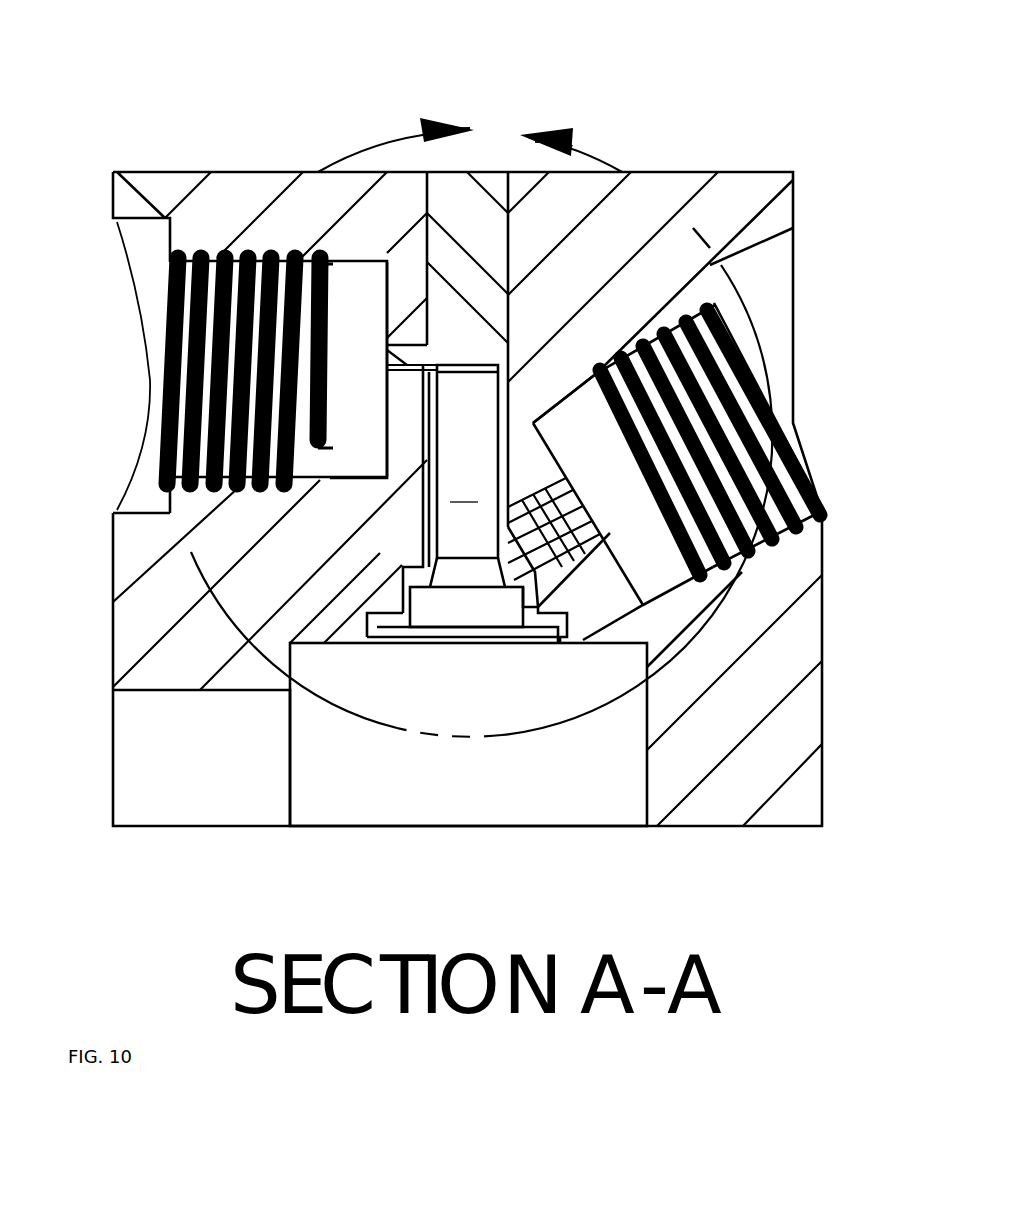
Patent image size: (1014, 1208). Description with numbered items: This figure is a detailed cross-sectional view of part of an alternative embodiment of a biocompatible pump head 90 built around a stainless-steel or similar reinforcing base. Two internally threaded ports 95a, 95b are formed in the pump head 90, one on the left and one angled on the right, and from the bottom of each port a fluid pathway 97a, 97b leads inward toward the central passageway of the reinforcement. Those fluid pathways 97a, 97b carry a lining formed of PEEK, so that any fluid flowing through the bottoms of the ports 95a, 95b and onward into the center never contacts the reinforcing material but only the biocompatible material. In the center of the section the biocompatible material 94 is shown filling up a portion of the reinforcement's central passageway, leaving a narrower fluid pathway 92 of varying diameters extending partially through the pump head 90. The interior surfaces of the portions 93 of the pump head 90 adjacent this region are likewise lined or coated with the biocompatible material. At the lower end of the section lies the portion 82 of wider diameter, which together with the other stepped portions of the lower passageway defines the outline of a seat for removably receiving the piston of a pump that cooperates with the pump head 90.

The biocompatible pump head 90 is at (160, 125).
The wider diameter portion 82 is at (394, 798).
The fluid pathway 92 is at (485, 504).
The lined portions of the pump head 93 is at (387, 626).
The biocompatible material 94 is at (465, 195).
The first port 95a is at (354, 292).
The second port 95b is at (660, 570).
The first fluid pathway 97a is at (403, 378).
The second fluid pathway 97b is at (560, 545).